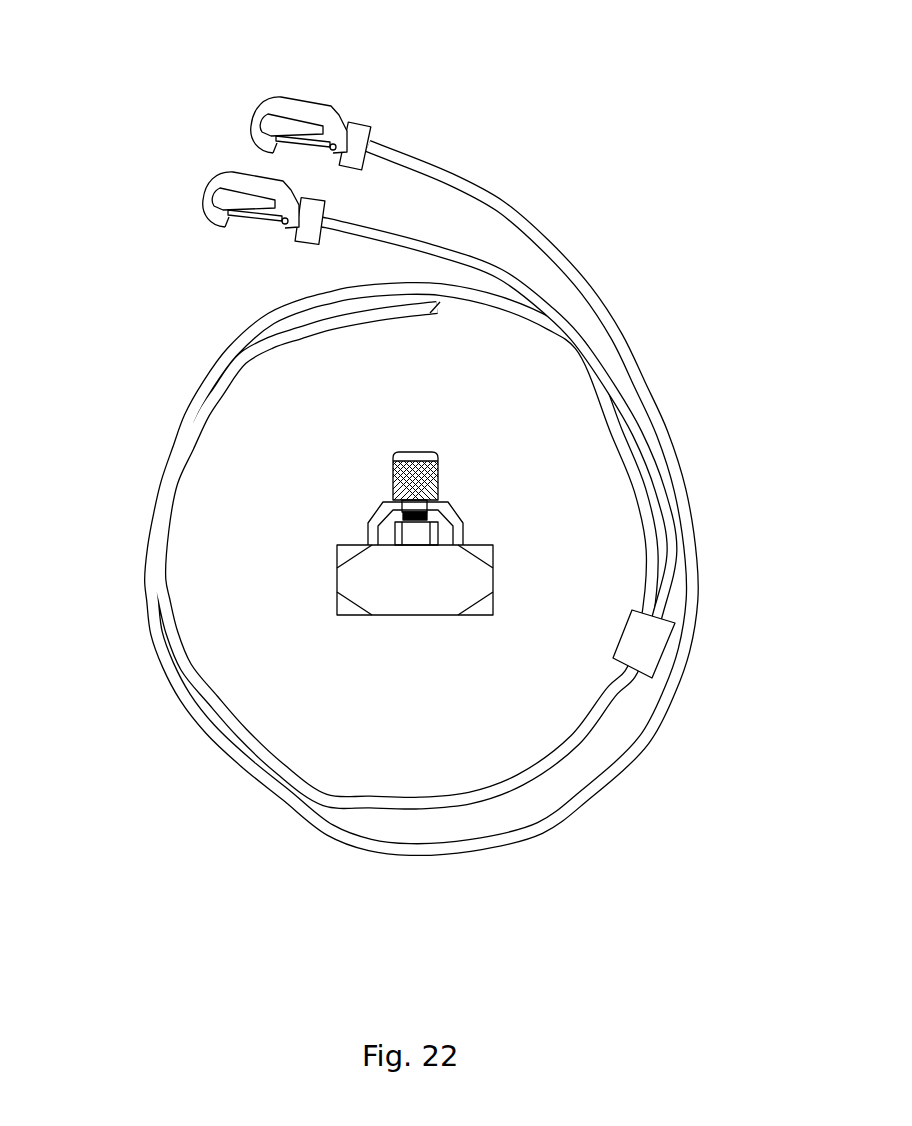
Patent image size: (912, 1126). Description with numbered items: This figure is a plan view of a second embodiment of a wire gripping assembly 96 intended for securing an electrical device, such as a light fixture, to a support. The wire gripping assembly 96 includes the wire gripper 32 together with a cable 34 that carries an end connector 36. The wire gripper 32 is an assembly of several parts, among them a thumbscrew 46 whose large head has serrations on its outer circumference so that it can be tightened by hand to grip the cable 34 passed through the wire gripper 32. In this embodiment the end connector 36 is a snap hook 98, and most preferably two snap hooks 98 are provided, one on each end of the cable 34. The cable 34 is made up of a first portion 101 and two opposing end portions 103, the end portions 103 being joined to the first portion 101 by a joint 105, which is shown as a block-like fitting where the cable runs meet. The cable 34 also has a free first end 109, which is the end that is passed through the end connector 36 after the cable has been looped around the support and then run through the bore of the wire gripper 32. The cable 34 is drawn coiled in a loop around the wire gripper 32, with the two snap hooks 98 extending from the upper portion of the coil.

The tether assembly 96 is at (148, 116).
The snap hook 98 is at (333, 108).
The second cable 36 is at (562, 251).
The first cable 34 is at (592, 800).
The cable end 109 is at (441, 308).
The knurled nut 46 is at (439, 480).
The anchor mount 32 is at (337, 580).
The cable segment 103 is at (642, 594).
The cable clamp 105 is at (620, 636).
The cable segment 101 is at (614, 691).